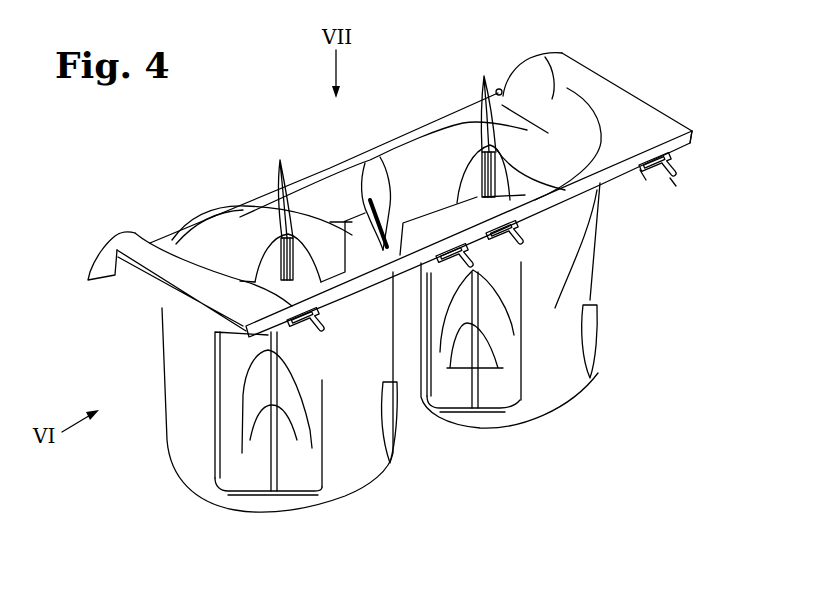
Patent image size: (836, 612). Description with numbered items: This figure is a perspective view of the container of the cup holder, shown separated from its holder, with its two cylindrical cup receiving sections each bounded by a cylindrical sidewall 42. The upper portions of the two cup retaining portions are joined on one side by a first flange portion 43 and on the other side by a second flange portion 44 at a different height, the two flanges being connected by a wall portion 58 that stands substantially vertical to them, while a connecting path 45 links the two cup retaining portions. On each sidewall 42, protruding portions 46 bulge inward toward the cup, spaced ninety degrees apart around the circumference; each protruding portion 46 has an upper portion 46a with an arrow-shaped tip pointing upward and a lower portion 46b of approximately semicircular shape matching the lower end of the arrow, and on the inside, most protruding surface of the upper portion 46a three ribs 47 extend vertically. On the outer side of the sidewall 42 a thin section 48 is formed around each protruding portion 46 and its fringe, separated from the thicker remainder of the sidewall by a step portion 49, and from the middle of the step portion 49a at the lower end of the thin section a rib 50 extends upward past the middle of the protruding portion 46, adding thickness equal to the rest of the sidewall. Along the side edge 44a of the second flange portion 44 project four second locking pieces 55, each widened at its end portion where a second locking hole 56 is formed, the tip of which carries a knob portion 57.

The sidewall 42 is at (178, 378).
The first flange portion 43 is at (333, 185).
The second flange portion 44 is at (630, 108).
The side edge 44a is at (682, 147).
The connecting path 45 is at (380, 157).
The protruding portion 46 is at (247, 412).
The upper portion 46a is at (262, 371).
The lower portion 46b is at (290, 443).
The rib 47 is at (281, 162).
The thin section 48 is at (453, 390).
The side wall 49 is at (307, 447).
The step portion 49a is at (432, 393).
The rib 50 is at (270, 468).
The second locking piece 55 is at (692, 193).
The second locking hole 56 is at (643, 173).
The knob portion 57 is at (679, 187).
The wall portion 58 is at (558, 54).